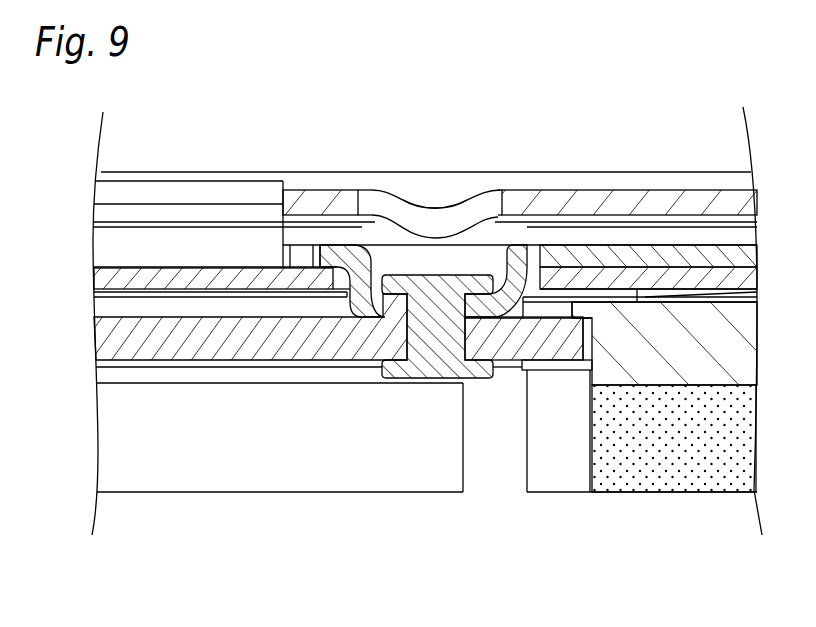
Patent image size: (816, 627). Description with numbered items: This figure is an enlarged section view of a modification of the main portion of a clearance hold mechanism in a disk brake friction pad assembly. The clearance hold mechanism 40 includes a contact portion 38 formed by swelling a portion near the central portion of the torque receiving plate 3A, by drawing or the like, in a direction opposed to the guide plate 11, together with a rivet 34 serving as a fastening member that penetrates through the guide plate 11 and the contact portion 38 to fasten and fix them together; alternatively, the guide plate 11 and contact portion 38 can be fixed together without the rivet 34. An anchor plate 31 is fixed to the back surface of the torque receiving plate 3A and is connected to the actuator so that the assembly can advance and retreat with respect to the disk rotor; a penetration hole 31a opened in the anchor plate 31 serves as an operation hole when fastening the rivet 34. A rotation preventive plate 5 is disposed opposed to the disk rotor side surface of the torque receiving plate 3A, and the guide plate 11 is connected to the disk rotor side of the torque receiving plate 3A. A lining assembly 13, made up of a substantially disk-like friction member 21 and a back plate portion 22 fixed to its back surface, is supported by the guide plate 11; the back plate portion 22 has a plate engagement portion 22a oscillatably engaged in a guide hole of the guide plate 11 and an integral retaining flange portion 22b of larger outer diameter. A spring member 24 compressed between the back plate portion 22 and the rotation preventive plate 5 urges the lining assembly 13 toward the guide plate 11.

The clearance hold mechanism 40 is at (423, 215).
The rivet 34 is at (432, 305).
The contact portion 38 is at (483, 303).
The anchor plate 31 is at (520, 153).
The penetration hole 31a is at (373, 190).
The torque receiving plate 3A is at (654, 235).
The rotation preventive plate 5 is at (216, 262).
The guide plate 11 is at (146, 312).
The spring member 24 is at (220, 293).
The lining assembly 13 is at (426, 452).
The back plate portion 22 is at (611, 434).
The plate engagement portion 22a is at (580, 325).
The retaining flange portion 22b is at (568, 302).
The friction member 21 is at (708, 447).